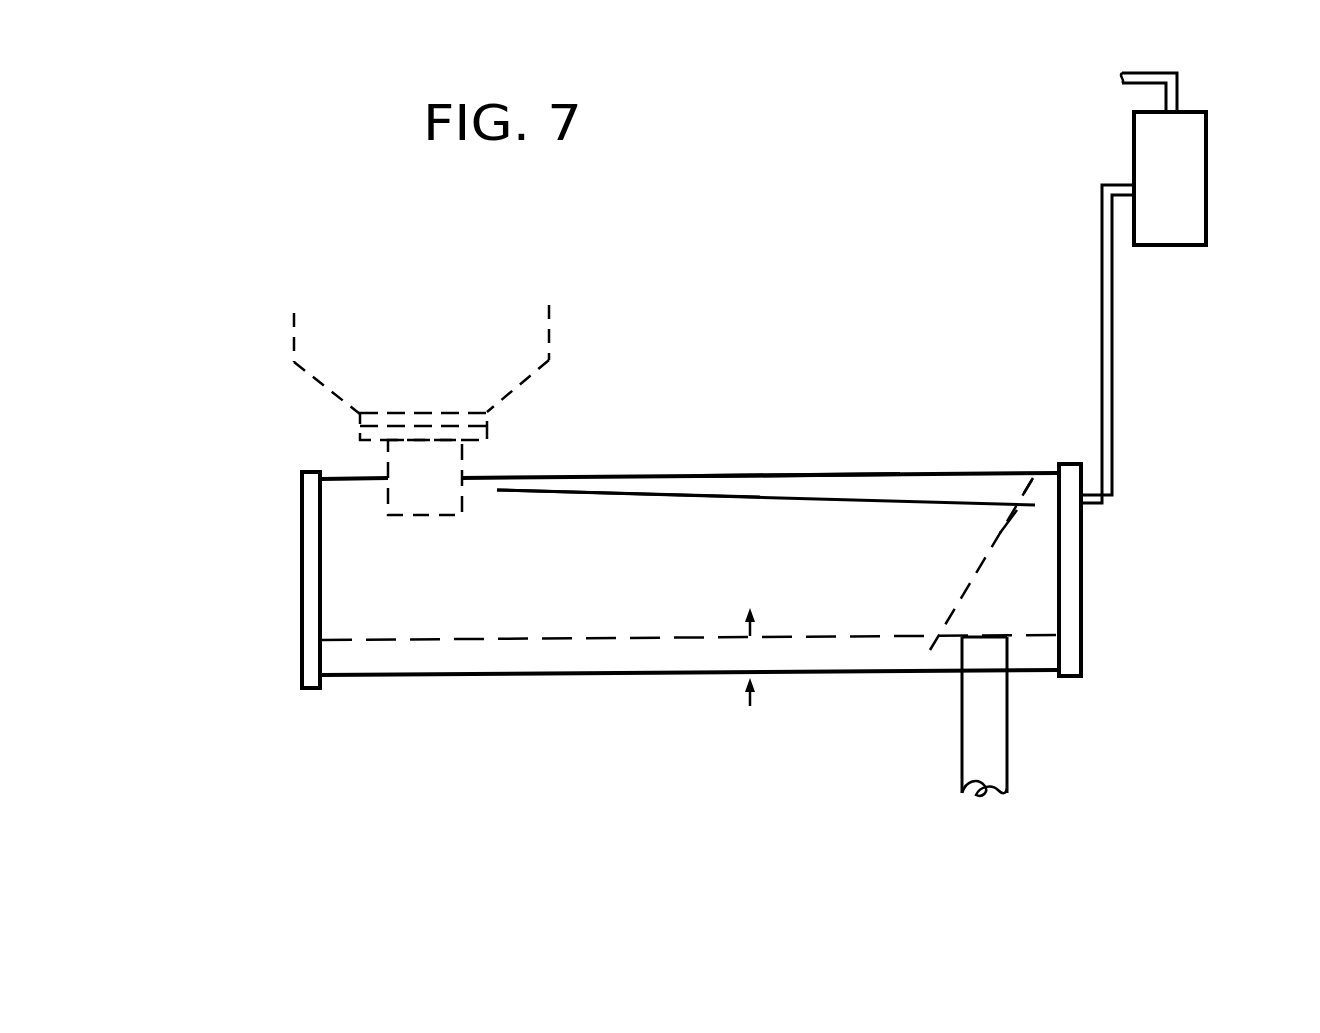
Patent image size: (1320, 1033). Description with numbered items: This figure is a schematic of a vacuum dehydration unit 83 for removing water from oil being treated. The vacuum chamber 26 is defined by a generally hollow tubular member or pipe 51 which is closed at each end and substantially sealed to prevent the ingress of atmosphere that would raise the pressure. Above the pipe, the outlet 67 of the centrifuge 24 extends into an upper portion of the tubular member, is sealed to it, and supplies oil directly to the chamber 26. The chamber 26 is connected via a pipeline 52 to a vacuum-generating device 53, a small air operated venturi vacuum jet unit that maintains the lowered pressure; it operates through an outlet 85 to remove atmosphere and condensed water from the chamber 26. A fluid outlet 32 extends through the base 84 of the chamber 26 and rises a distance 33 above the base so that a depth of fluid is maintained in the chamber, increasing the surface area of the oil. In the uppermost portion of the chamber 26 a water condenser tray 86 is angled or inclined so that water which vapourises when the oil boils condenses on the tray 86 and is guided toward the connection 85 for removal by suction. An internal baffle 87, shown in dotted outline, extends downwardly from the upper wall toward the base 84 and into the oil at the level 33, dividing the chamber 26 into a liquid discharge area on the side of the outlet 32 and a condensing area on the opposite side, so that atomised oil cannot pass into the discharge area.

The vacuum dehydration unit 83 is at (910, 112).
The base 84 is at (603, 676).
The tubular member or pipe 51 is at (873, 475).
The water condenser tray 86 is at (782, 498).
The vacuum chamber 26 is at (648, 503).
The centrifuge 24 is at (275, 368).
The outlet 67 is at (388, 465).
The internal baffle 87 is at (1000, 533).
The outlet 85 is at (1023, 452).
The distance 33 is at (766, 668).
The fluid outlet 32 is at (968, 705).
The pipeline 52 is at (1112, 310).
The vacuum-generating device 53 is at (1200, 140).